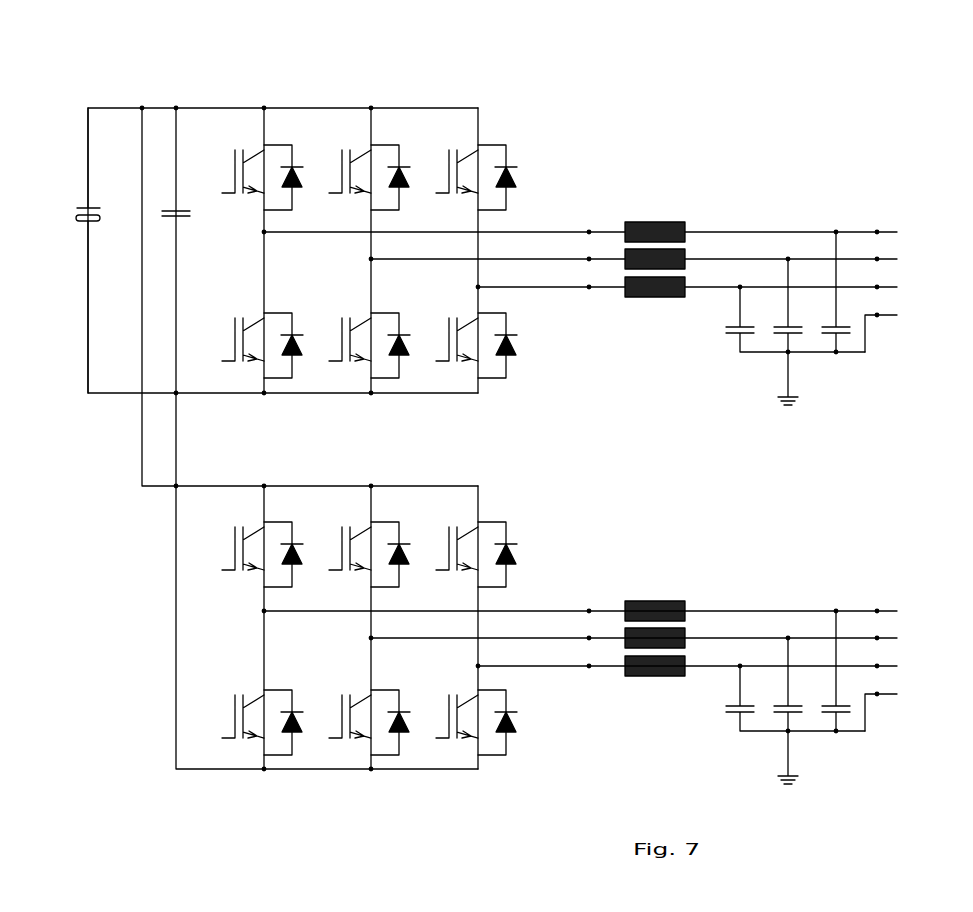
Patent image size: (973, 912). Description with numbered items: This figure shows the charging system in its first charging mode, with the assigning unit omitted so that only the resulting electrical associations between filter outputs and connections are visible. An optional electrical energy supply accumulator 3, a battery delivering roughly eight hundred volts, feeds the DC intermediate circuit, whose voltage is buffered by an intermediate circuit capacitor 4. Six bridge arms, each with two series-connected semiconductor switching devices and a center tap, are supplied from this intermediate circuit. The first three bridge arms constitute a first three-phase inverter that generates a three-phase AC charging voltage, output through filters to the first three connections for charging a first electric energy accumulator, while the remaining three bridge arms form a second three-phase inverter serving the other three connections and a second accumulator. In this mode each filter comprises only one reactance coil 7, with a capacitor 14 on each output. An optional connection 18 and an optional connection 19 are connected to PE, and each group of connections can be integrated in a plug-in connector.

The electrical energy supply accumulator 3 is at (100, 218).
The intermediate circuit capacitor 4 is at (190, 216).
The reactance coil 7 is at (686, 280).
The capacitor 14 is at (787, 507).
The connection 18 is at (888, 314).
The connection 19 is at (888, 693).